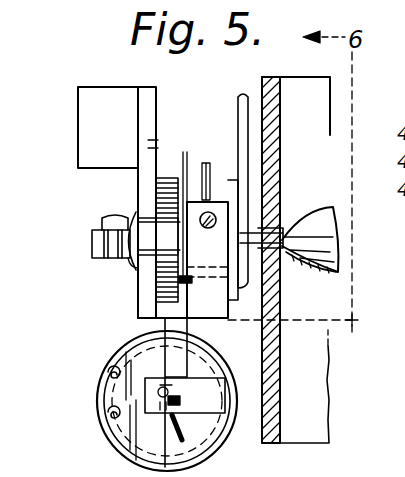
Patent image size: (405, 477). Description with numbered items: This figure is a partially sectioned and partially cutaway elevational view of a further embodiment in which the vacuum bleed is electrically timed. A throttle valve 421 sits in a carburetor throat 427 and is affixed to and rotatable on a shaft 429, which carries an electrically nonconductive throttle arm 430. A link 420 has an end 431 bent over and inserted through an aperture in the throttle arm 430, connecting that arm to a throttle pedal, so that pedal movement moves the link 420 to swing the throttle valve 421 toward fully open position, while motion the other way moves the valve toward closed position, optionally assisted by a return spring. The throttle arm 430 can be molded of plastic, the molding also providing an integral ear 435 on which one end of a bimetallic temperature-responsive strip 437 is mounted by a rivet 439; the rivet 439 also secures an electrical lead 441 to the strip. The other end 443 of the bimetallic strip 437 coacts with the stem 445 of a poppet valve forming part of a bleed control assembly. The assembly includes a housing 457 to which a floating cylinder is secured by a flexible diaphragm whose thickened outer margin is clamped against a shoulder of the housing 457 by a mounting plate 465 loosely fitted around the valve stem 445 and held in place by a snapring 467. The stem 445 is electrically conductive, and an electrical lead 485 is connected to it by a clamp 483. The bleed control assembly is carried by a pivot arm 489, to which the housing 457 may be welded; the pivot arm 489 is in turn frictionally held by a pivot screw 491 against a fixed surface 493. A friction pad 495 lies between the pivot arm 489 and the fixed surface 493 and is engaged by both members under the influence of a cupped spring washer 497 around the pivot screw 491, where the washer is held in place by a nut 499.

The link 420 is at (266, 112).
The carburetor throat 427 is at (300, 382).
The fixed surface 493 is at (156, 145).
The friction pad 495 is at (160, 148).
The nut 499 is at (104, 222).
The pivot screw 491 is at (95, 249).
The cupped spring washer 497 is at (130, 267).
The end 431 is at (183, 153).
The integral ear 435 is at (206, 163).
The bimetallic temperature-responsive strip 437 is at (228, 297).
The rivet 439 is at (216, 216).
The electrical lead 441 is at (243, 156).
The throttle arm 430 is at (234, 186).
The shaft 429 is at (330, 247).
The throttle valve 421 is at (323, 266).
The pivot arm 489 is at (155, 313).
The housing 457 is at (100, 370).
The snapring 467 is at (125, 437).
The other end 443 is at (164, 392).
The mounting plate 465 is at (112, 412).
The clamp 483 is at (182, 398).
The stem 445 is at (180, 388).
The electrical lead 485 is at (195, 415).